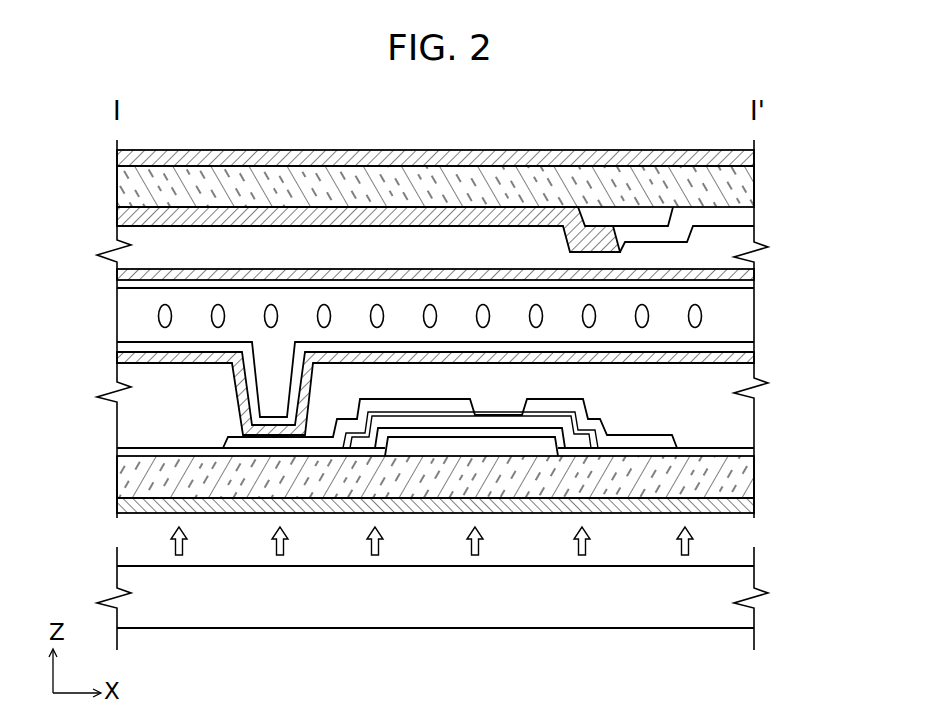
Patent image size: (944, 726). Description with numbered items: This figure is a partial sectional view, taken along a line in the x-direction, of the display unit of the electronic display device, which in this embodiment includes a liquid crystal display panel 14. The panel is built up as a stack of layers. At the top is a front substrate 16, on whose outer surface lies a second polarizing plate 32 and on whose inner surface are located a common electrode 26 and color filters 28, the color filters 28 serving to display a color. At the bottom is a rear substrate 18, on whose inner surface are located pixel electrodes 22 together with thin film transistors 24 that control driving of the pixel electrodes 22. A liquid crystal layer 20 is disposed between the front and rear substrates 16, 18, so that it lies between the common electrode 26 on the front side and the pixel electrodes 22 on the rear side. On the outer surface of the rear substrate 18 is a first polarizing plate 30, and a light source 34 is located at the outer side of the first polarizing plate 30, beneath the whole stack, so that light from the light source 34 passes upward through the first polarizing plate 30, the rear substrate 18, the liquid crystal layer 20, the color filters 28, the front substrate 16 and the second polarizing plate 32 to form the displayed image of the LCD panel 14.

The liquid crystal display (LCD) panel 14 is at (645, 142).
The second polarizing plate 32 is at (758, 155).
The front substrate 16 is at (758, 186).
The color filters 28 is at (117, 222).
The common electrode 26 is at (746, 276).
The liquid crystal layer 20 is at (749, 320).
The pixel electrodes 22 is at (117, 359).
The thin film transistors 24 is at (597, 408).
The rear substrate 18 is at (756, 473).
The first polarizing plate 30 is at (756, 503).
The light source 34 is at (414, 612).